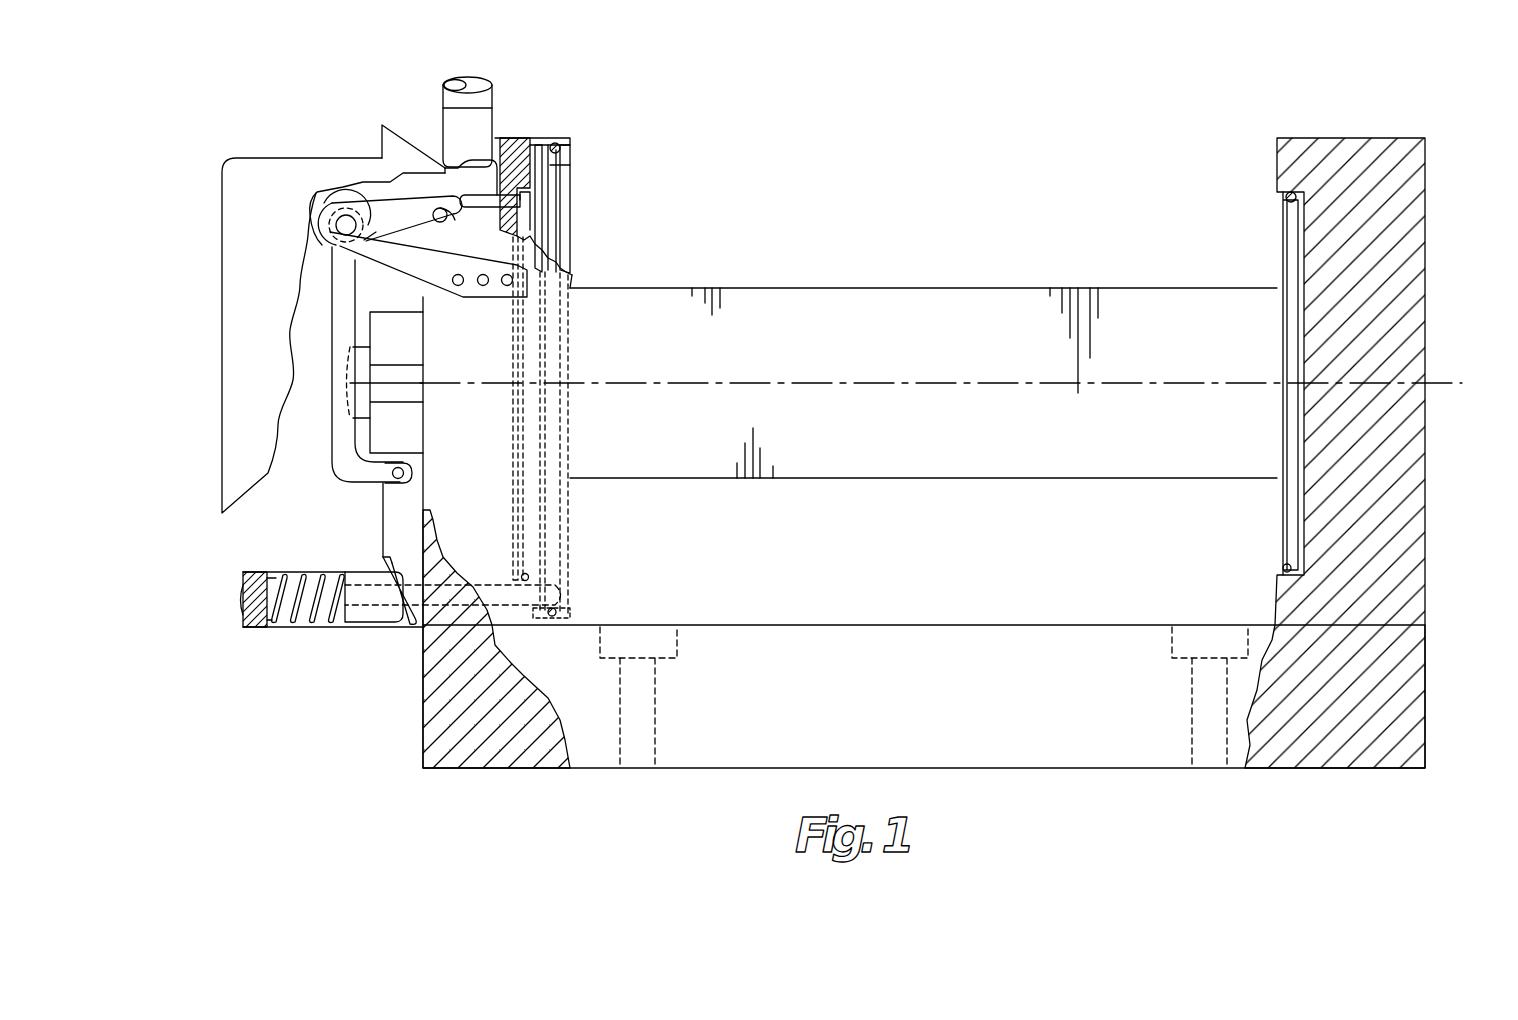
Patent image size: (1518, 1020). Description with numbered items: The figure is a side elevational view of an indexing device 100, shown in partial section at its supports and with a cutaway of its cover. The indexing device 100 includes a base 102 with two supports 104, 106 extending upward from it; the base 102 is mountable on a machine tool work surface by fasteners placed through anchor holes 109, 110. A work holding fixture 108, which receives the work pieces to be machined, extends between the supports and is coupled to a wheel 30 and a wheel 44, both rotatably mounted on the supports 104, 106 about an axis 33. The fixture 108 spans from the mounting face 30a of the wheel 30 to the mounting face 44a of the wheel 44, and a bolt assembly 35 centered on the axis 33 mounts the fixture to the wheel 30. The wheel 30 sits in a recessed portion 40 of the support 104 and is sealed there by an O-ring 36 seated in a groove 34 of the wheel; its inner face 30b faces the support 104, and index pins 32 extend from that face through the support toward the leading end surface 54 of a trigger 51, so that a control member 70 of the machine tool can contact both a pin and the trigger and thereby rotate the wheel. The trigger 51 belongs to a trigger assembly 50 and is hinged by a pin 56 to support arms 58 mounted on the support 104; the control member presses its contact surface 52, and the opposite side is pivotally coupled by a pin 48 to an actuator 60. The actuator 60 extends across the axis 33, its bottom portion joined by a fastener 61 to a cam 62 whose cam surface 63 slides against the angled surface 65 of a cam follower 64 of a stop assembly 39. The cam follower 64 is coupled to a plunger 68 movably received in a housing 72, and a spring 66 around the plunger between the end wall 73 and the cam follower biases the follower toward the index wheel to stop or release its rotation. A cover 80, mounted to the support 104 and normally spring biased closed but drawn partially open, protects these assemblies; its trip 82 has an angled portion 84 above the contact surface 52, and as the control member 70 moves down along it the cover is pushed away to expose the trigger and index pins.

The index wheel 30 is at (573, 230).
The mounting face 30a is at (572, 267).
The inner face 30b is at (513, 553).
The index pins 32 is at (500, 182).
The axis of rotation 33 is at (1445, 383).
The groove 34 is at (573, 173).
The bolt assembly 35 is at (367, 437).
The O-ring 36 is at (567, 152).
The stop assembly 39 is at (232, 578).
The recessed portion 40 is at (550, 147).
The wheel 44 is at (1272, 220).
The mounting face 44a is at (1277, 253).
The pin 48 is at (433, 233).
The trigger assembly 50 is at (297, 210).
The trigger 51 is at (323, 203).
The contact surface 52 is at (421, 200).
The leading end surface 54 is at (457, 210).
The pin 56 is at (333, 230).
The support arms 58 is at (497, 297).
The actuator 60 is at (327, 317).
The fastener 61 is at (393, 473).
The cam 62 is at (388, 523).
The cam surface 63 is at (383, 560).
The cam follower 64 is at (377, 613).
The angled surface 65 is at (400, 607).
The spring 66 is at (307, 613).
The plunger 68 is at (242, 597).
The control member 70 is at (492, 93).
The housing 72 is at (343, 630).
The end wall 73 is at (257, 632).
The cover 80 is at (247, 158).
The trip 82 is at (382, 142).
The angled portion 84 is at (400, 140).
The indexing device 100 is at (1052, 800).
The base 102 is at (1020, 660).
The support 104 is at (510, 510).
The support 106 is at (1375, 497).
The work holding fixture 108 is at (1010, 325).
The anchor hole 109 is at (645, 740).
The anchor hole 110 is at (1215, 745).